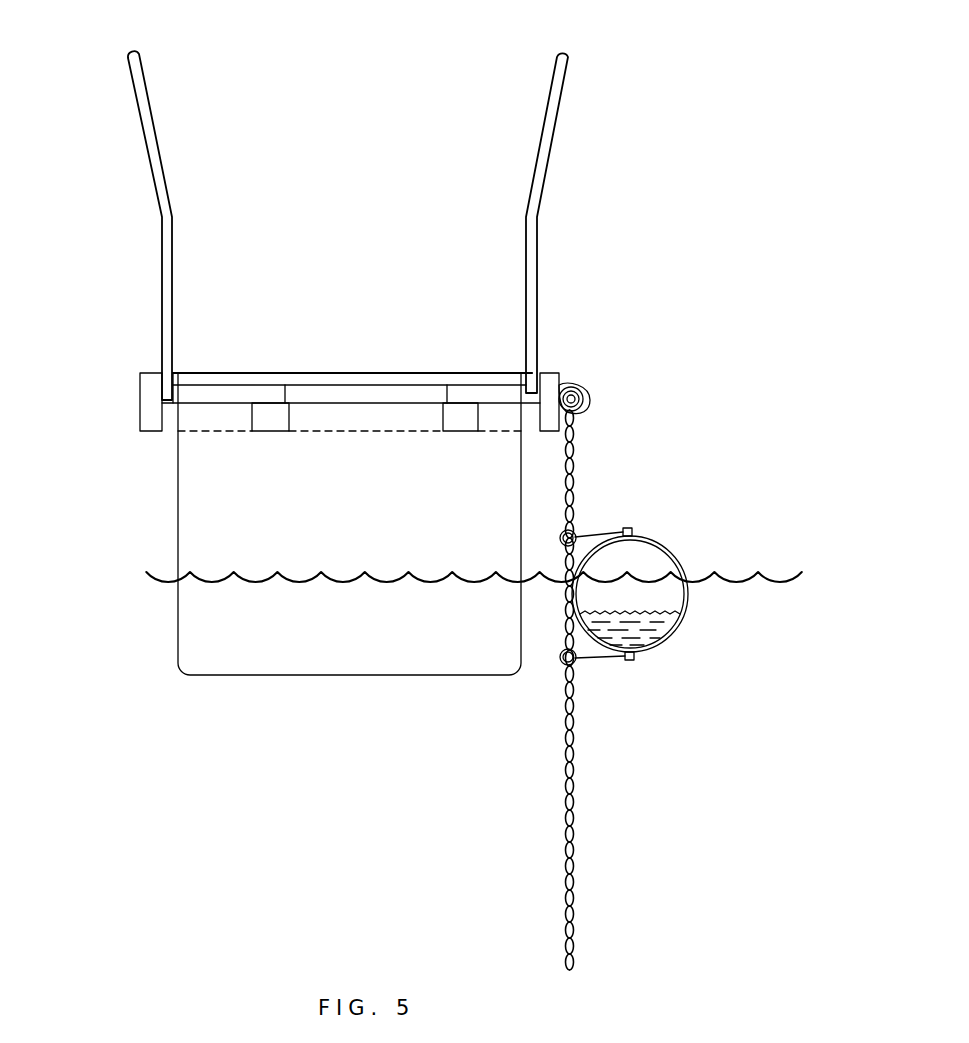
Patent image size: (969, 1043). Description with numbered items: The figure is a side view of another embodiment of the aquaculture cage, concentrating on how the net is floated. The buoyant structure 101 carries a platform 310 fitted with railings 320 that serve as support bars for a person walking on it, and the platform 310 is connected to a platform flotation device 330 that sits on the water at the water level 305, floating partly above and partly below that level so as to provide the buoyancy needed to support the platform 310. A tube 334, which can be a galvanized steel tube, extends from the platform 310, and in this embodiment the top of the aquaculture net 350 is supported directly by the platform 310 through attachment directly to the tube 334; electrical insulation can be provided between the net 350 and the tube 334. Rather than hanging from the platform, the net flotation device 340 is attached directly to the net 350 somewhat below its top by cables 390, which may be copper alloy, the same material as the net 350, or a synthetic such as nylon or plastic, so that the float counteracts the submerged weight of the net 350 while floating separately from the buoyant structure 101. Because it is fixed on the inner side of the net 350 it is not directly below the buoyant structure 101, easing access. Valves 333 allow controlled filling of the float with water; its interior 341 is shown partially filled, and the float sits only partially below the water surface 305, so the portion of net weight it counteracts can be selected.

The buoyant structure 101 is at (199, 371).
The water level 305 is at (164, 582).
The platform 310 is at (367, 381).
The railings 320 is at (145, 78).
The platform flotation device 330 is at (200, 491).
The valve 333 is at (630, 530).
The tube 334 is at (586, 395).
The net flotation device 340 is at (663, 648).
The float interior 341 is at (657, 595).
The aquaculture net 350 is at (571, 958).
The cables 390 is at (577, 535).